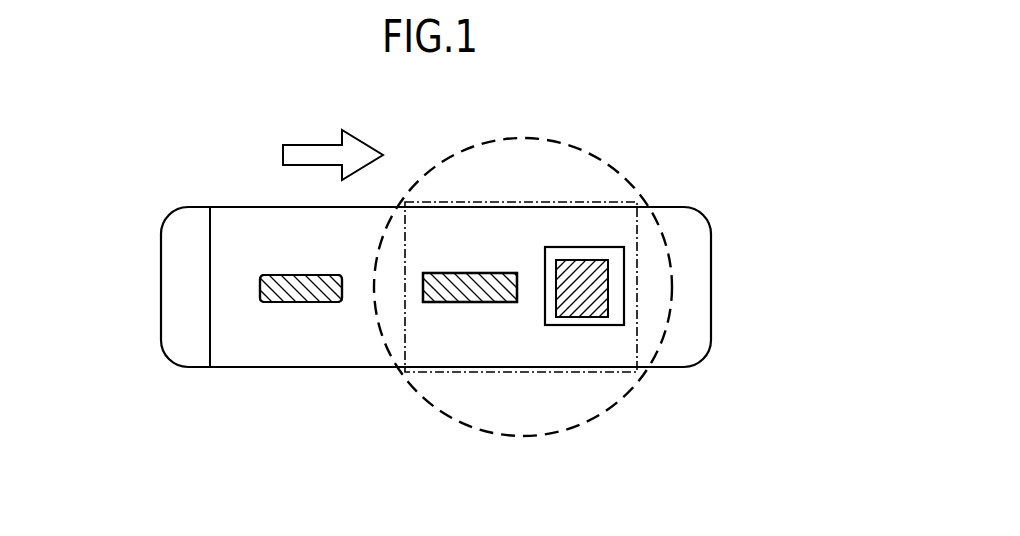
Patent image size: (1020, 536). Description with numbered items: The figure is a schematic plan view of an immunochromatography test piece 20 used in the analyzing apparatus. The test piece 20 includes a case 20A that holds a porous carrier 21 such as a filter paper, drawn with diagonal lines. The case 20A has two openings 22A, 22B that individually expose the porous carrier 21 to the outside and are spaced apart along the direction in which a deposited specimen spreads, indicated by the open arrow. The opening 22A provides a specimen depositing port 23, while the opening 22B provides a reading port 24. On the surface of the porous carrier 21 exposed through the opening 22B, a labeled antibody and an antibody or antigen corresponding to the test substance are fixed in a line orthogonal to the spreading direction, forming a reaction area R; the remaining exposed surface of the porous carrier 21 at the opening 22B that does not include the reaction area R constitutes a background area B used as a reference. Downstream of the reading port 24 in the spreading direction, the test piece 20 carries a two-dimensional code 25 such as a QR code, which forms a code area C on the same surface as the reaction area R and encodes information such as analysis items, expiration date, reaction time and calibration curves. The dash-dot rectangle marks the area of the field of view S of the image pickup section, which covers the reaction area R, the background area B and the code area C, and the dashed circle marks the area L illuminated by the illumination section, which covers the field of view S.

The immunochromatography test piece 20 is at (717, 227).
The case 20A is at (175, 265).
The porous carrier 21 is at (306, 297).
The opening 22A is at (270, 302).
The opening 22B is at (432, 302).
The specimen depositing port 23 is at (302, 272).
The reading port 24 is at (453, 268).
The two-dimensional code 25 is at (624, 291).
The area to be illuminated L is at (513, 138).
The area of field of view S is at (586, 202).
The background area B is at (468, 302).
The reaction area R is at (490, 305).
The code area C is at (583, 330).